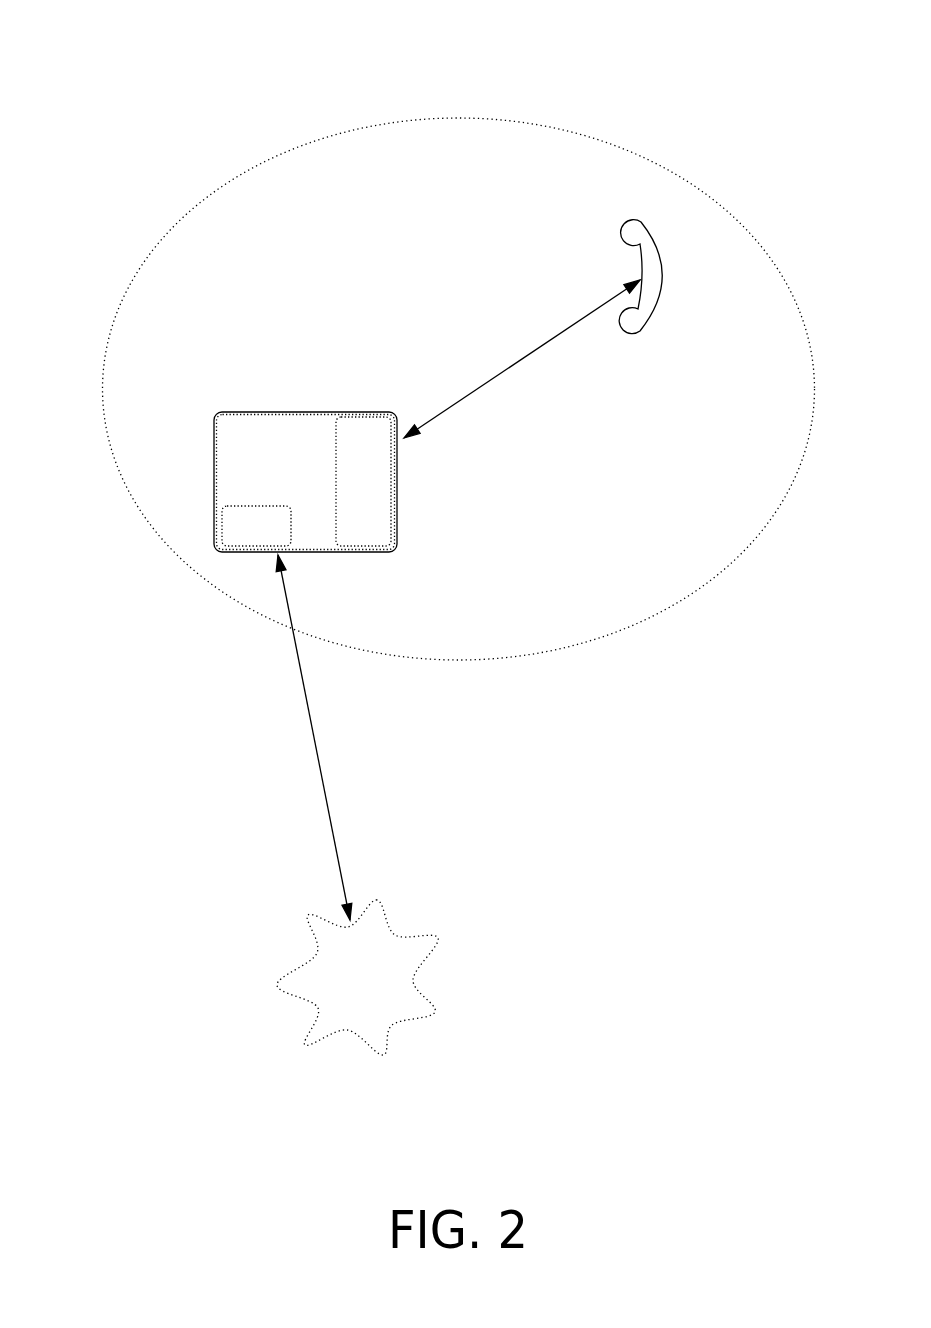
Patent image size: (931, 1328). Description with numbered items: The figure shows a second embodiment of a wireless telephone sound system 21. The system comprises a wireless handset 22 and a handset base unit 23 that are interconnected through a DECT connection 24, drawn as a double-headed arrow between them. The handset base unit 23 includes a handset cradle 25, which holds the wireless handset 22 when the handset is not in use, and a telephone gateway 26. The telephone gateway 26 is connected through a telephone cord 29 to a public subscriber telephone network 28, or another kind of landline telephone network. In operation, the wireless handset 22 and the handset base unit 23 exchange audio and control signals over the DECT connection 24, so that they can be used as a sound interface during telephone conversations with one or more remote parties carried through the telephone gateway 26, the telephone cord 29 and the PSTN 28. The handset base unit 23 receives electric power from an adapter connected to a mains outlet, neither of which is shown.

The wireless telephone sound system 21 is at (193, 192).
The wireless handset 22 is at (648, 243).
The handset base unit 23 is at (225, 482).
The DECT connection 24 is at (510, 355).
The handset cradle 25 is at (372, 505).
The telephone gateway 26 is at (235, 540).
The public subscriber telephone network (PSTN) 28 is at (417, 955).
The telephone cord 29 is at (313, 790).